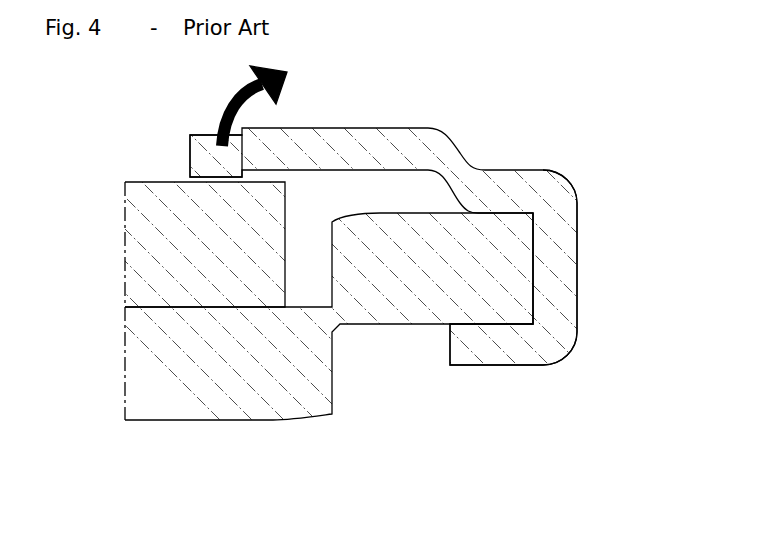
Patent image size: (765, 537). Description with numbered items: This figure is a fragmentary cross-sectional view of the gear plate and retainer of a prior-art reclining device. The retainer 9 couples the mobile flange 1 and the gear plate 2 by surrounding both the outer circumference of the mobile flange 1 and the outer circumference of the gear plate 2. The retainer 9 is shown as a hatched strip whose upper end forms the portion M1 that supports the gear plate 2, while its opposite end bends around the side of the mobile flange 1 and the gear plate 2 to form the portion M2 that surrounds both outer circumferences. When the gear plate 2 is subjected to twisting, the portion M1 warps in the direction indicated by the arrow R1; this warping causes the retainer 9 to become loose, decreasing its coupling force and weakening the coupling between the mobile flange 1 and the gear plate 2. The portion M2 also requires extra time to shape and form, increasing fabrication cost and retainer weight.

The mobile flange 1 is at (215, 400).
The gear plate 2 is at (155, 242).
The retainer 9 is at (443, 153).
The portion of the retainer supporting the gear plate M1 is at (210, 156).
The portion surrounding the outer circumferences M2 is at (560, 267).
The arrow R1 is at (246, 106).